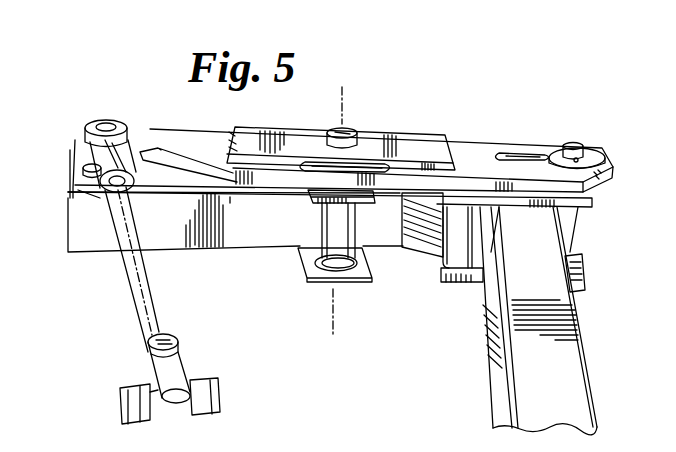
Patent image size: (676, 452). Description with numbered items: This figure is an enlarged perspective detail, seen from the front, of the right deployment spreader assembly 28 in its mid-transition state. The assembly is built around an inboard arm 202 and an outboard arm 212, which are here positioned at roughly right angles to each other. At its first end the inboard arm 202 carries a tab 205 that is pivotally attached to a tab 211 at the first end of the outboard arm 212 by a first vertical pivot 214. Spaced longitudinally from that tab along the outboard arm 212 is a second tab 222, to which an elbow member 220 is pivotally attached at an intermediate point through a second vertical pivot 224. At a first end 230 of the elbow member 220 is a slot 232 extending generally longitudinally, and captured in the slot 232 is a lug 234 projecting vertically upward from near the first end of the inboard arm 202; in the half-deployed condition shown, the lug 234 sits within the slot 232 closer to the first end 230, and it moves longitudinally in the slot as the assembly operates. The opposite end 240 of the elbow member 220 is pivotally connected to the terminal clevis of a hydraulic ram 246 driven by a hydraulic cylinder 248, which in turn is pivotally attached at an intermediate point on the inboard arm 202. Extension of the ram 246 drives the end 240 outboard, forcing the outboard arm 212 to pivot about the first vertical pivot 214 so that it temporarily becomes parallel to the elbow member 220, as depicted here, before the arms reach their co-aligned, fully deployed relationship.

The right deployment spreader assembly 28 is at (490, 116).
The inboard arm 202 is at (575, 385).
The tab 205 is at (515, 310).
The tab 211 is at (466, 240).
The outboard arm 212 is at (272, 233).
The first vertical pivot 214 is at (452, 292).
The elbow member 220 is at (432, 145).
The second tab 222 is at (367, 258).
The second vertical pivot 224 is at (345, 105).
The first end of the elbow member 230 is at (613, 166).
The slot 232 is at (565, 113).
The lug 234 is at (583, 147).
The opposite end of the elbow member 240 is at (106, 121).
The hydraulic ram 246 is at (133, 281).
The hydraulic cylinder 248 is at (196, 392).